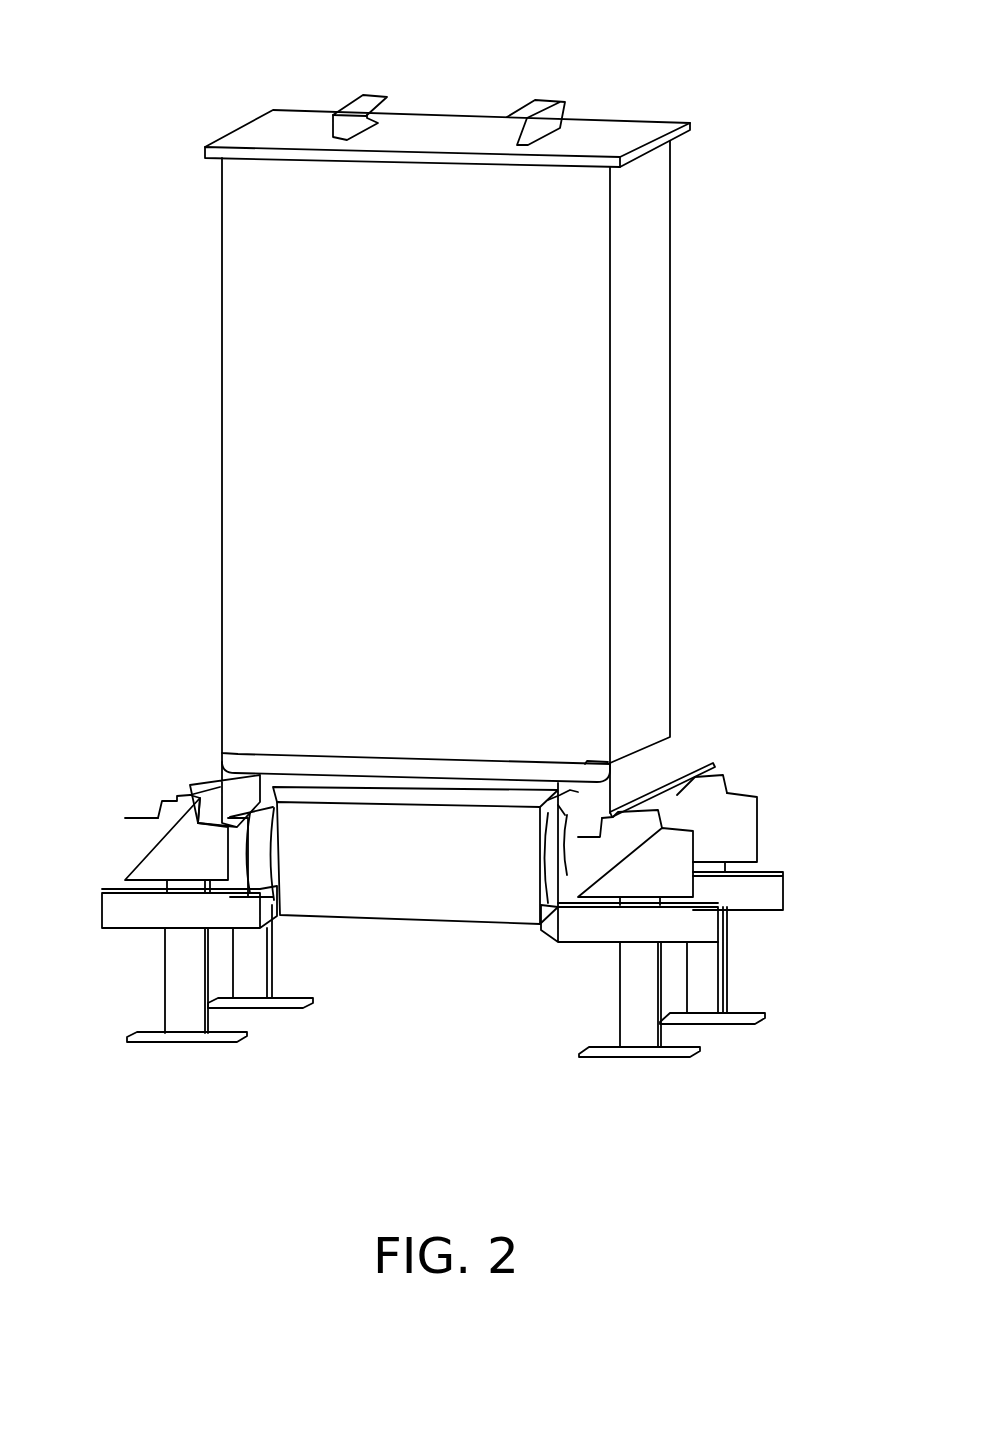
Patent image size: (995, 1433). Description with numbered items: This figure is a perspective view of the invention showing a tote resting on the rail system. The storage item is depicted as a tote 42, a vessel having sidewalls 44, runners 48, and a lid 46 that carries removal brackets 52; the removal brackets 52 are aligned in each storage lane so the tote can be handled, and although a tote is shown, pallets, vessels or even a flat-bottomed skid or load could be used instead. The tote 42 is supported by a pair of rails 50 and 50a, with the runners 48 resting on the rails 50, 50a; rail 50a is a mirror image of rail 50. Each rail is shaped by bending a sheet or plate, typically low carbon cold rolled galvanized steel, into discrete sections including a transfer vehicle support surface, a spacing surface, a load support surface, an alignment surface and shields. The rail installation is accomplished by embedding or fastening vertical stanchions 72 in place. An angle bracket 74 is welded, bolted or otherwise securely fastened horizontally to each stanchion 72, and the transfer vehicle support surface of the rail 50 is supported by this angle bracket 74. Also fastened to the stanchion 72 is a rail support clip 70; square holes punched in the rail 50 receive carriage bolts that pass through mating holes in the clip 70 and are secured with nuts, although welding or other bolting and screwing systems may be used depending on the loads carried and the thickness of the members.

The tote 42 is at (320, 293).
The sidewalls 44 is at (653, 512).
The lid 46 is at (600, 132).
The runners 48 is at (237, 790).
The rail 50 is at (712, 765).
The rail 50a is at (207, 802).
The removal brackets 52 is at (543, 100).
The rail support clip 70 is at (185, 855).
The vertical stanchions 72 is at (185, 978).
The angle bracket 74 is at (765, 892).